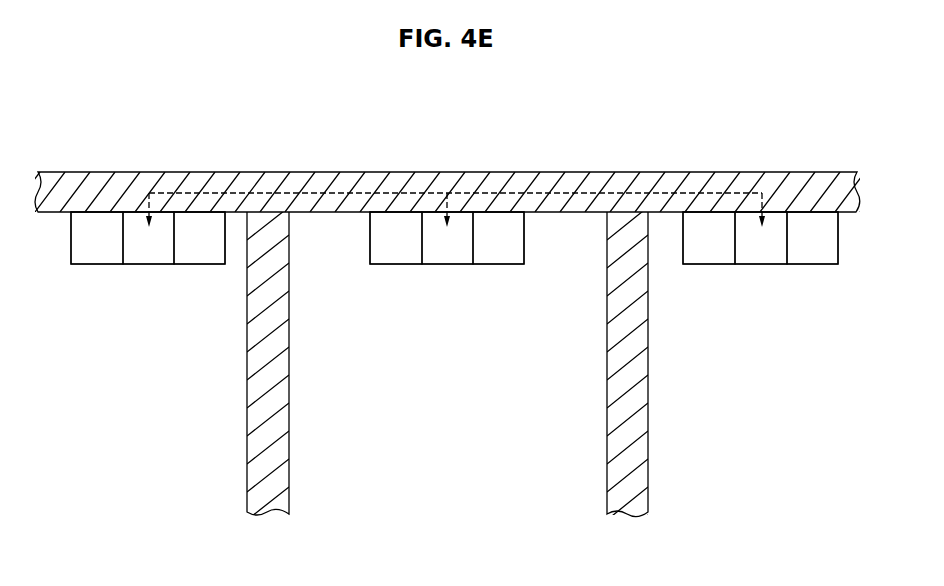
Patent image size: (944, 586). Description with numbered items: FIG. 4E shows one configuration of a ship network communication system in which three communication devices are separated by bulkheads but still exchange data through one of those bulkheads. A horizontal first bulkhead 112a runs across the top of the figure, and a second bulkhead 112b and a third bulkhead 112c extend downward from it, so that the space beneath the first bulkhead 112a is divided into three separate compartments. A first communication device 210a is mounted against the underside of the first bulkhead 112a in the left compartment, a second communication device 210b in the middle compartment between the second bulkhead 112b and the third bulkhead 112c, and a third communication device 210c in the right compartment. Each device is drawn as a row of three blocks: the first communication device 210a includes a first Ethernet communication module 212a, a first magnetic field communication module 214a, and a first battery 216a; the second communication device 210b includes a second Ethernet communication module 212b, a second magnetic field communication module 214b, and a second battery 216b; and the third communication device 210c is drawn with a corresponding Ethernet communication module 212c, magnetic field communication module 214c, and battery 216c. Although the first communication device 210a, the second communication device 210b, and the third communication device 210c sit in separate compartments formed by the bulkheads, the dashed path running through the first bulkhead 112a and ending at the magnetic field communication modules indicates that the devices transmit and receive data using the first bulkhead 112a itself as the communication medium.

The first bulkhead 112a is at (553, 180).
The second bulkhead 112b is at (273, 382).
The third bulkhead 112c is at (625, 382).
The first communication device 210a is at (148, 288).
The second communication device 210b is at (447, 288).
The third communication device 210c is at (760, 288).
The first Ethernet communication module 212a is at (97, 238).
The first magnetic field communication module 214a is at (148, 238).
The first battery 216a is at (199, 238).
The second Ethernet communication module 212b is at (396, 238).
The second magnetic field communication module 214b is at (447, 238).
The second battery 216b is at (498, 238).
The Ethernet communication module 212c is at (812, 238).
The magnetic field communication module 214c is at (761, 238).
The battery 216c is at (709, 238).